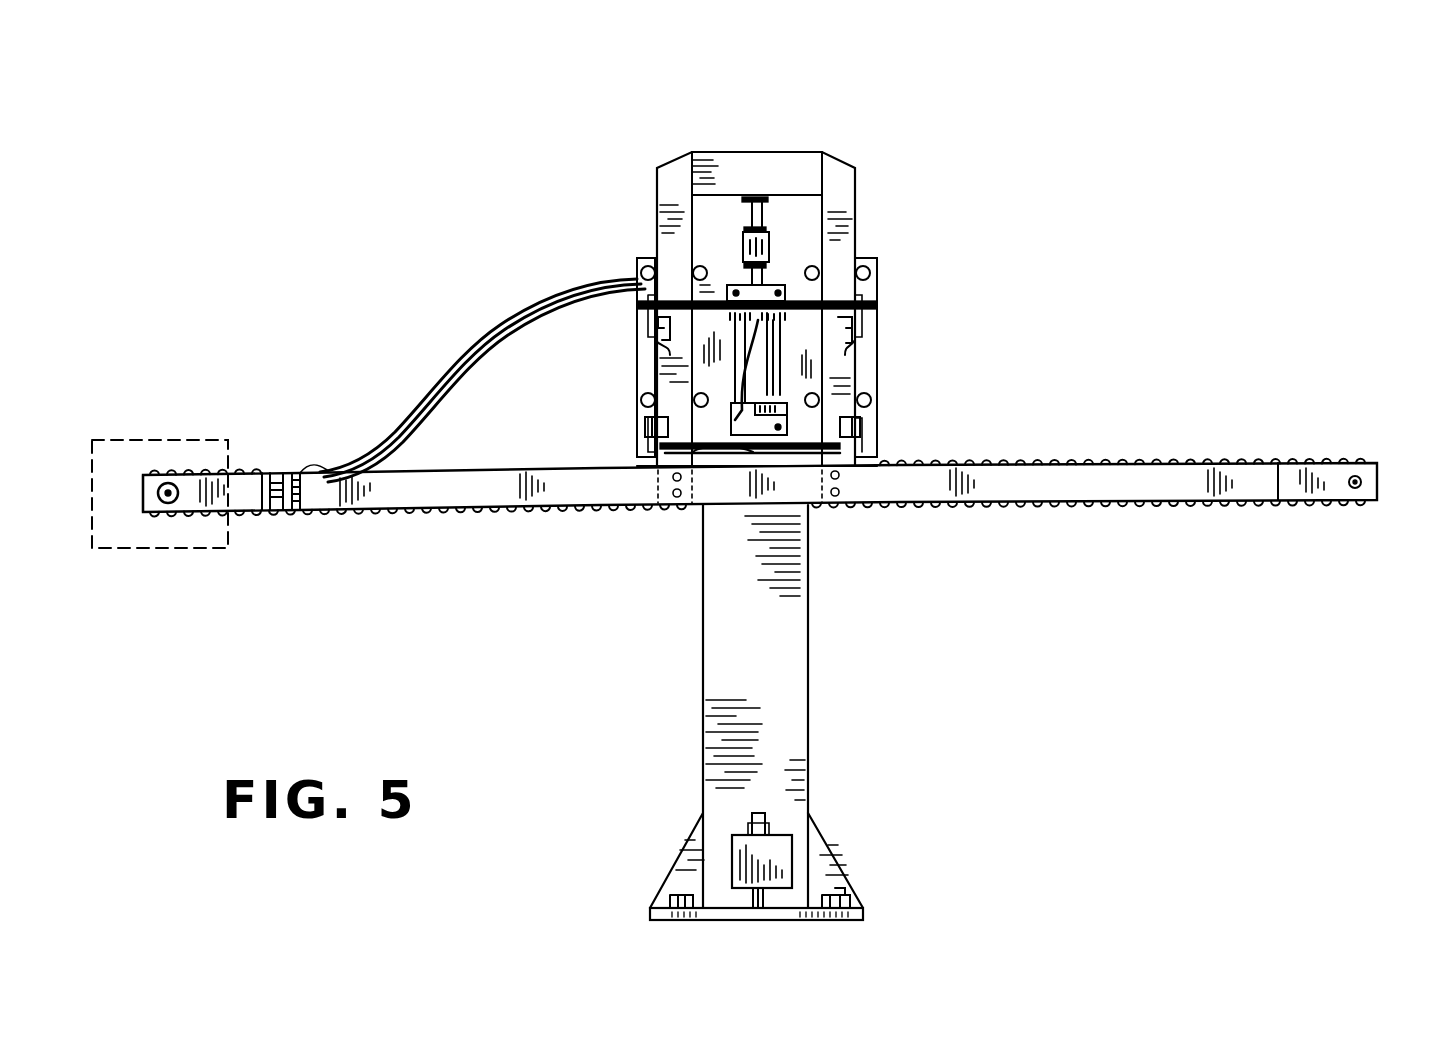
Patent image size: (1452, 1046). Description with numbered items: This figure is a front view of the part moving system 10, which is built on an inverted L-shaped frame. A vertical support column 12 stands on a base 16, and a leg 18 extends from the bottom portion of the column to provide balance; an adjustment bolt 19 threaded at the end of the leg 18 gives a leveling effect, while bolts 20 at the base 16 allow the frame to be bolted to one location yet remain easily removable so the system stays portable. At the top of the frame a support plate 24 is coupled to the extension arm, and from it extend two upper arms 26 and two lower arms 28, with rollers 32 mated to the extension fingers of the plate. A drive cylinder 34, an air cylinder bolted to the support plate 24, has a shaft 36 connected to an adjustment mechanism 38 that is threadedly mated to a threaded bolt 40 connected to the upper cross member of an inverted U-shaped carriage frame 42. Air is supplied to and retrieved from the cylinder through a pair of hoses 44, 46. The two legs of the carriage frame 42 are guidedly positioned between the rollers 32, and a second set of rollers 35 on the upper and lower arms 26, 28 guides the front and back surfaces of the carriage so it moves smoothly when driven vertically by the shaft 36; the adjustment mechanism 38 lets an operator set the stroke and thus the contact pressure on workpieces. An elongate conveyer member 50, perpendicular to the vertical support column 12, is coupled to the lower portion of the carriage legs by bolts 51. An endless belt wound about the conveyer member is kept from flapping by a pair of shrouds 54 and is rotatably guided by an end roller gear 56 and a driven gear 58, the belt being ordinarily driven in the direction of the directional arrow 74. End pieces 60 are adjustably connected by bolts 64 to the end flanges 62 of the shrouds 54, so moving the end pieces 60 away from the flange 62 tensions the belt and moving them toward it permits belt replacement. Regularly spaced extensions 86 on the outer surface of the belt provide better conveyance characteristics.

The part moving system 10 is at (1062, 390).
The vertical support column 12 is at (808, 732).
The base 16 is at (865, 913).
The leg 18 is at (792, 845).
The adjustment bolt 19 is at (748, 902).
The bolts 20 is at (690, 900).
The support plate 24 is at (877, 265).
The upper arms 26 is at (610, 282).
The lower arms 28 is at (637, 445).
The rollers 32 is at (700, 262).
The drive cylinder 34 is at (782, 366).
The second set of rollers 35 is at (637, 355).
The shaft 36 is at (700, 247).
The adjustment mechanism 38 is at (772, 245).
The threaded bolt 40 is at (742, 218).
The inverted U-shaped carriage frame 42 is at (766, 150).
The hose 44 is at (735, 455).
The hose 46 is at (706, 467).
The elongate conveyer member 50 is at (1068, 456).
The bolts 51 is at (675, 493).
The shrouds 54 is at (1187, 490).
The end roller gear 56 is at (1355, 490).
The driven gear 58 is at (168, 504).
The end pieces 60 is at (247, 500).
The end flanges 62 is at (290, 512).
The bolts 64 is at (300, 471).
The directional arrow 74 is at (1392, 530).
The extensions 86 is at (1100, 503).